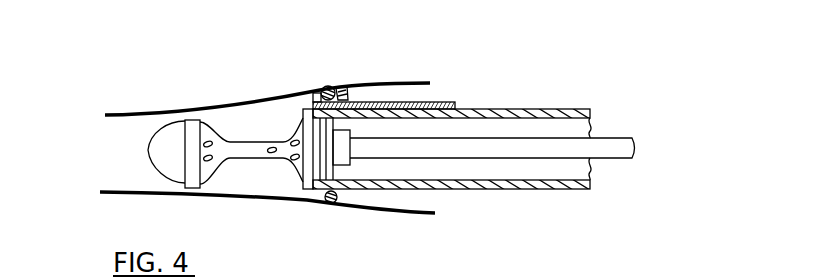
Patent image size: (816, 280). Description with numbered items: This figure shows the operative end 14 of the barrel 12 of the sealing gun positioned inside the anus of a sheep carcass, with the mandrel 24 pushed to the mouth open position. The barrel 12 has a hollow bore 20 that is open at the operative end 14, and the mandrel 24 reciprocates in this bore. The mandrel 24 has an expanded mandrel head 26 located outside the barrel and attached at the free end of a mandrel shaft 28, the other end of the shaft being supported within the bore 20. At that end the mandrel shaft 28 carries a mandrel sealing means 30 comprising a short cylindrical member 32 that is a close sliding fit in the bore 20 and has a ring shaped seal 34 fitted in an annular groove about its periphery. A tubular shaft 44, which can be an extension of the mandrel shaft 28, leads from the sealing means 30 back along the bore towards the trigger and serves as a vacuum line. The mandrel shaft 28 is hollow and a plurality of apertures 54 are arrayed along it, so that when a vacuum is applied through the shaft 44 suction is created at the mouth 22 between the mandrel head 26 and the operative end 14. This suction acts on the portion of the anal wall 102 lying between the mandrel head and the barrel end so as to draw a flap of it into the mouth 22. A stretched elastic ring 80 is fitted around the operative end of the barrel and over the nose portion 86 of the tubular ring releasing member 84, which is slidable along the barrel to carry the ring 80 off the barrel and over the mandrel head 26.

The anal wall 102 is at (115, 114).
The mandrel 24 is at (248, 138).
The mandrel head 26 is at (148, 151).
The mouth 22 is at (251, 140).
The mandrel shaft 28 is at (241, 159).
The apertures 54 is at (272, 147).
The operative end 14 is at (298, 180).
The cylindrical member 32 is at (302, 181).
The barrel 12 is at (532, 108).
The bore 20 is at (510, 167).
The shaft 44 is at (610, 160).
The mandrel sealing means 30 is at (362, 116).
The ring releasing member 84 is at (445, 102).
The nose portion 86 is at (317, 96).
The elastic ring 80 is at (338, 88).
The ring shaped seal 34 is at (342, 190).